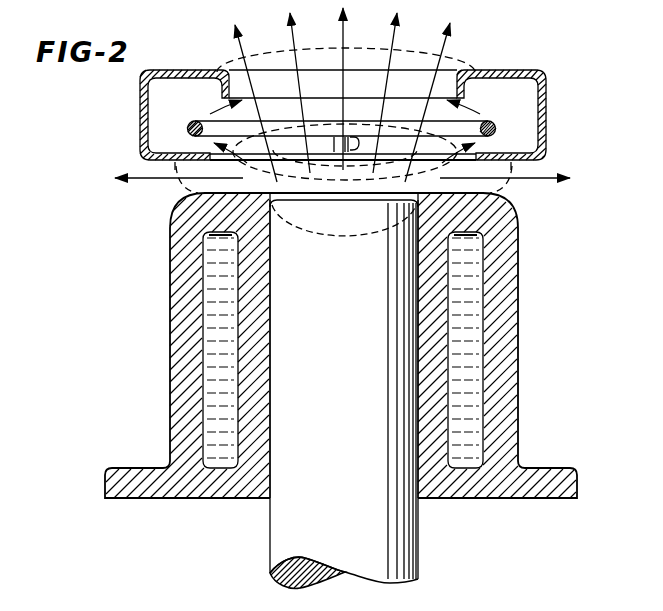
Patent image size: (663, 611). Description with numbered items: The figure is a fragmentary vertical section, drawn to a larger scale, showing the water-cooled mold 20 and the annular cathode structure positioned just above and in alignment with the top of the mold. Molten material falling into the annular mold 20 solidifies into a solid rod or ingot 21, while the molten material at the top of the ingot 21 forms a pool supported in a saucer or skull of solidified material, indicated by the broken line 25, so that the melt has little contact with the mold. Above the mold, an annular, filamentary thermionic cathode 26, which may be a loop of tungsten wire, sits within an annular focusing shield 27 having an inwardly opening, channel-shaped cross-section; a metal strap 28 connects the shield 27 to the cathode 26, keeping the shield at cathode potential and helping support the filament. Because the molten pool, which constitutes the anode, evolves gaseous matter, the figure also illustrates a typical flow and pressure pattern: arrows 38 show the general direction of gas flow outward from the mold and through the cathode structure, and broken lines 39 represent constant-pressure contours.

The water-cooled mold 20 is at (518, 306).
The ingot 21 is at (270, 528).
The broken line 25 is at (325, 238).
The filamentary cathode 26 is at (191, 120).
The focusing shield 27 is at (140, 116).
The metal strap 28 is at (359, 135).
The arrows 38 is at (342, 36).
The broken lines 39 is at (430, 54).